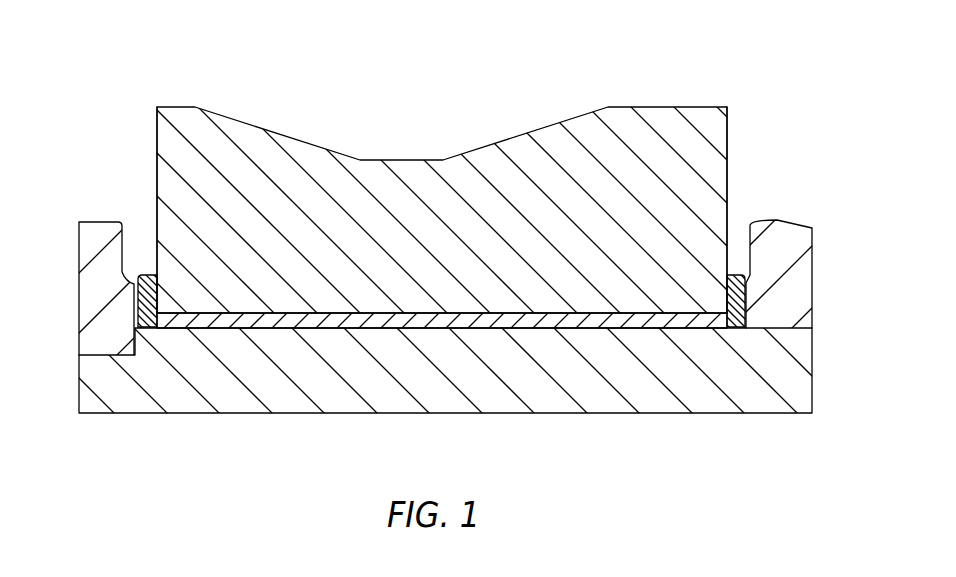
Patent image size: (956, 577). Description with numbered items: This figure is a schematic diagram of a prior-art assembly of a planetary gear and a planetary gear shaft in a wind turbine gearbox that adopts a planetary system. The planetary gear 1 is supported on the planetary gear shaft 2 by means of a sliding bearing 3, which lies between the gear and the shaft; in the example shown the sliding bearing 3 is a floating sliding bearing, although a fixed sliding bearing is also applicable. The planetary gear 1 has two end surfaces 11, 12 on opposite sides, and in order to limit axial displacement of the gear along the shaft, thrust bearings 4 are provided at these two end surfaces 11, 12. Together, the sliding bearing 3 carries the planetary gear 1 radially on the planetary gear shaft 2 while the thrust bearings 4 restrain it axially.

The planetary gear 1 is at (600, 148).
The end surface 11 is at (141, 186).
The end surface 12 is at (728, 181).
The planetary gear shaft 2 is at (391, 379).
The sliding bearing 3 is at (637, 323).
The thrust bearing 4 is at (138, 307).